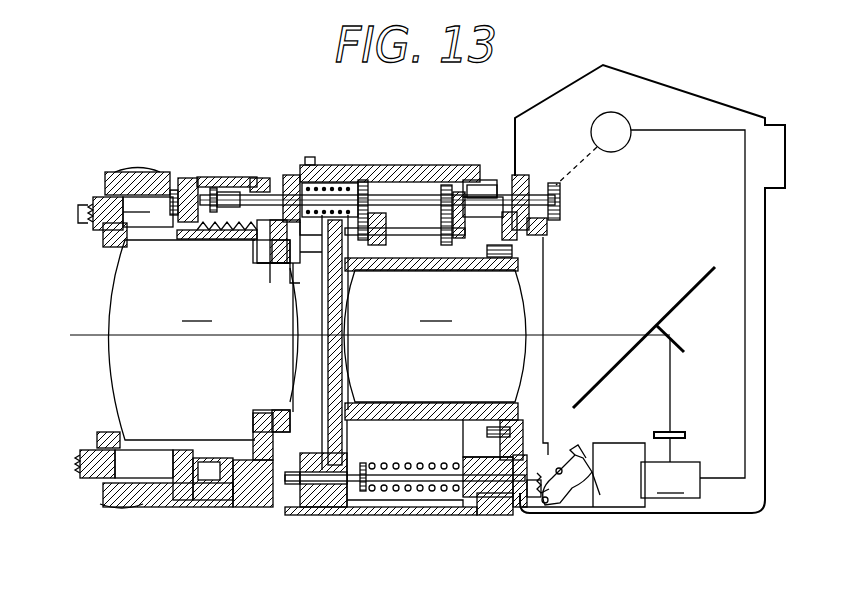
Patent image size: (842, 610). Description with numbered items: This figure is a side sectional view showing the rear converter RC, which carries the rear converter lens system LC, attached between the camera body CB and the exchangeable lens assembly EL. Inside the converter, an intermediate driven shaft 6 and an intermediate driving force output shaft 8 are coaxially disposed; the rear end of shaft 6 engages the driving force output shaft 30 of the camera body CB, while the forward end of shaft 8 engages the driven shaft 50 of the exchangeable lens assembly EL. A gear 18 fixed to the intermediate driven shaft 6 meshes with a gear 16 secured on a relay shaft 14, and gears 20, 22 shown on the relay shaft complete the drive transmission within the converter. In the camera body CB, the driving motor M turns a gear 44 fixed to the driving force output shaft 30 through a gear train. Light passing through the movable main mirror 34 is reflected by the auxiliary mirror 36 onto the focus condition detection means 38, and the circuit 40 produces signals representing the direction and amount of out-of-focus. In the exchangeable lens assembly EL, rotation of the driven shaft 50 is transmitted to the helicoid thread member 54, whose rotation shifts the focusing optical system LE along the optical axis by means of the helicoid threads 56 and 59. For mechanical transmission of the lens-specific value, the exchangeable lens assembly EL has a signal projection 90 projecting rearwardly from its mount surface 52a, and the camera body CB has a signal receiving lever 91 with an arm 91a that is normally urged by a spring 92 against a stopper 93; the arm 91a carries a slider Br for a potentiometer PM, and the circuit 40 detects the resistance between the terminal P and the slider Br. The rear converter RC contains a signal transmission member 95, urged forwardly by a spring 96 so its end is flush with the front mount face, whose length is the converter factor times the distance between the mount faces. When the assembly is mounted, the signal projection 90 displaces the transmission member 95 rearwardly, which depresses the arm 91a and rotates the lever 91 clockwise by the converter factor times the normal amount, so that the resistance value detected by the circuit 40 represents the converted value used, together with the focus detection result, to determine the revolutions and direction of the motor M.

The intermediate driven shaft 6 is at (487, 195).
The intermediate driving force output shaft 8 is at (322, 195).
The relay shaft 14 is at (400, 212).
The gear 16 is at (440, 215).
The gear 18 is at (452, 188).
The gear hub 20 is at (378, 225).
The gear 22 is at (365, 210).
The driving force output shaft 30 is at (520, 190).
The movable main mirror 34 is at (688, 292).
The auxiliary mirror 36 is at (683, 340).
The focus condition detection means 38 is at (684, 431).
The focus condition detection circuit 40 is at (670, 480).
The gear 44 is at (562, 196).
The driven shaft 50 is at (250, 195).
The mount surface 52a is at (275, 482).
The helicoid thread member 54 is at (171, 182).
The helicoid thread 56 is at (180, 230).
The helicoid thread 59 is at (188, 180).
The signal projection 90 is at (290, 490).
The signal receiving lever 91 is at (555, 506).
The arm 91a is at (512, 497).
The spring 92 is at (528, 500).
The stopper 93 is at (553, 440).
The signal transmission member 95 is at (360, 488).
The spring 96 is at (403, 478).
The driving motor M is at (593, 148).
The terminal P is at (575, 452).
The slider Br is at (590, 470).
The potentiometer PM is at (598, 496).
The exchangeable lens assembly EL is at (127, 515).
The rear converter RC is at (433, 522).
The camera body CB is at (652, 517).
The focusing optical system LE is at (204, 340).
The rear converter lens system LC is at (435, 339).